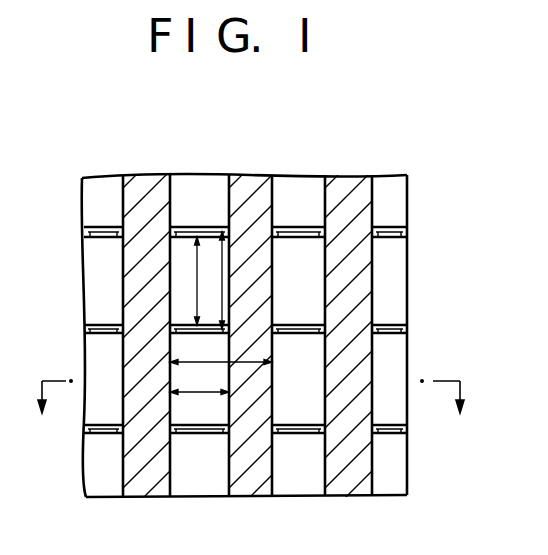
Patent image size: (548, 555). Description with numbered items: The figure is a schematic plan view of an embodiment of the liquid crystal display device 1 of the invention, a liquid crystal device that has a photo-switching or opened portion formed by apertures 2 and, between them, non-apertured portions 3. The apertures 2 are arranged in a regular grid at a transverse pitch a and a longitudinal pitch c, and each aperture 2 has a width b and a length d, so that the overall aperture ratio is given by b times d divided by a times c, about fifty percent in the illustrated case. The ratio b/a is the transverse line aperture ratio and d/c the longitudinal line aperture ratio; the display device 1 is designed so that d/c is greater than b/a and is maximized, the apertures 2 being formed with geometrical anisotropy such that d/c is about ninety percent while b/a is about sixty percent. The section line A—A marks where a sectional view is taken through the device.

The liquid crystal display device 1 is at (249, 340).
The aperture 2 is at (298, 412).
The non-apertured portion 3 is at (360, 478).